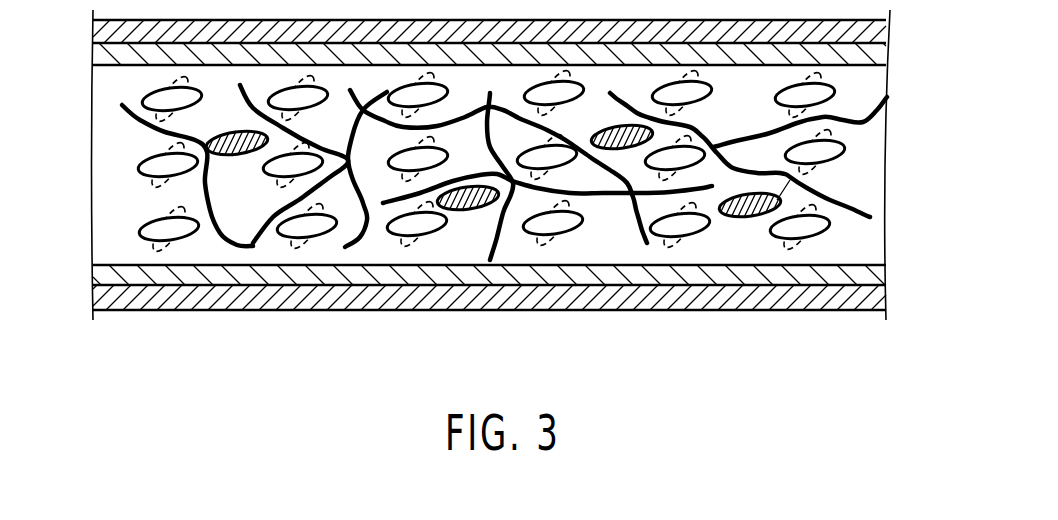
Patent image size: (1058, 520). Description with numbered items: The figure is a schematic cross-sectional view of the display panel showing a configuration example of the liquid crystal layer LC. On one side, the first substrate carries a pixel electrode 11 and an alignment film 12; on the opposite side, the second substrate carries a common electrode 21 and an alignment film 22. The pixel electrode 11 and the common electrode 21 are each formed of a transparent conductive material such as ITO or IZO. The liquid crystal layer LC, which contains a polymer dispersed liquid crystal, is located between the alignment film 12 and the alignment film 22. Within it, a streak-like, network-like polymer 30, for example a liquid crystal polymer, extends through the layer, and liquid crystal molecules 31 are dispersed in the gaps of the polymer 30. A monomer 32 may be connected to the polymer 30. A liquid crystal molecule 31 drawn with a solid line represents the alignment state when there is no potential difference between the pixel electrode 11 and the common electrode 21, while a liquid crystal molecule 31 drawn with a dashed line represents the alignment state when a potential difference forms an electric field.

The pixel electrode 11 is at (878, 302).
The alignment film 12 is at (880, 275).
The common electrode 21 is at (880, 33).
The alignment film 22 is at (882, 59).
The polymer 30 is at (220, 240).
The liquid crystal molecule 31 is at (145, 165).
The monomer 32 is at (747, 207).
The liquid crystal layer LC is at (860, 184).